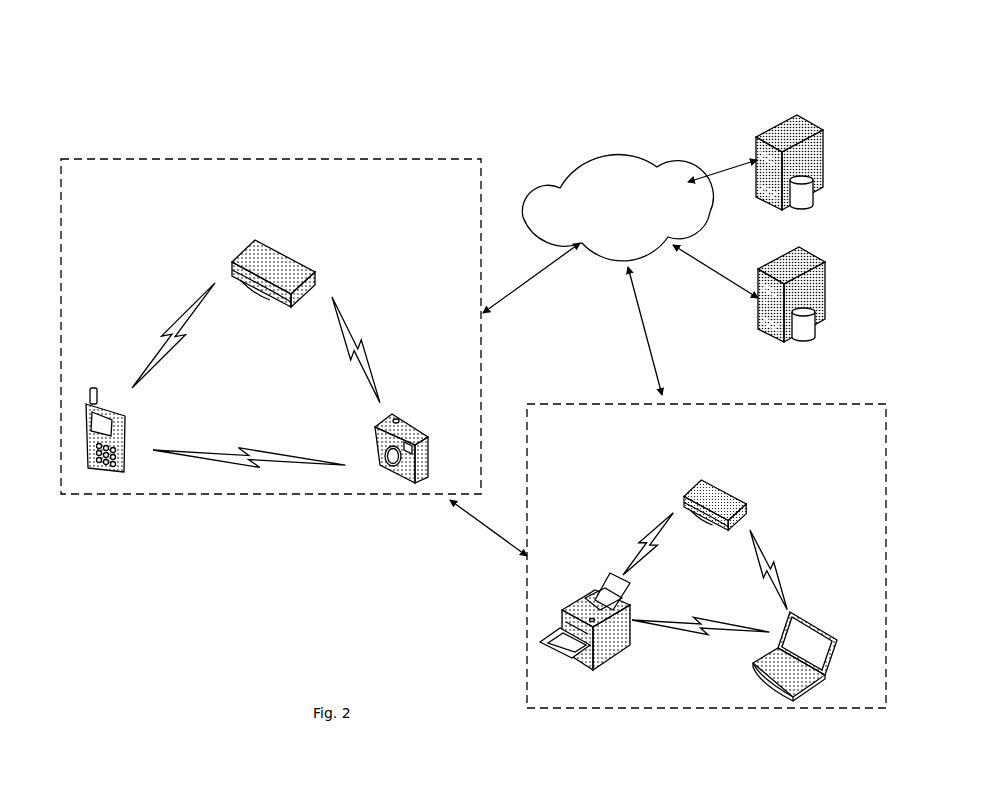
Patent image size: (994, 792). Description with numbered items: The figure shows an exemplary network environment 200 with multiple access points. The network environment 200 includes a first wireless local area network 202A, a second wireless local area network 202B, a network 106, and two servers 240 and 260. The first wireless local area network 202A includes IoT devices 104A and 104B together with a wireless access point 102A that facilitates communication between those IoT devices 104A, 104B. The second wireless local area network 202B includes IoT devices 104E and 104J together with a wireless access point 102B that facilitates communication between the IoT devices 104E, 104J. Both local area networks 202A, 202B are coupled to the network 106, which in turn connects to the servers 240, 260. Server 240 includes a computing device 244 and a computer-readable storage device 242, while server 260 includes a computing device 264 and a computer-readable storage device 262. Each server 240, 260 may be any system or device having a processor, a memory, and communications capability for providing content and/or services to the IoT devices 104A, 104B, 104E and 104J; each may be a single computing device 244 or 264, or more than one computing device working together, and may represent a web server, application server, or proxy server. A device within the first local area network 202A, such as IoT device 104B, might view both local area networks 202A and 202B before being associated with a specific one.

The network environment 200 is at (372, 80).
The network 106 is at (616, 152).
The wireless local area network 202A is at (270, 158).
The wireless local area network 202B is at (710, 403).
The wireless access point 102A is at (257, 240).
The wireless access point 102B is at (702, 479).
The IoT device 104A is at (85, 402).
The IoT device 104B is at (415, 424).
The IoT device 104E is at (565, 598).
The IoT device 104J is at (815, 615).
The server 240 is at (815, 118).
The computer-readable storage device 242 is at (801, 208).
The computing device 244 is at (765, 137).
The server 260 is at (838, 272).
The computer-readable storage device 262 is at (808, 338).
The computing device 264 is at (813, 246).